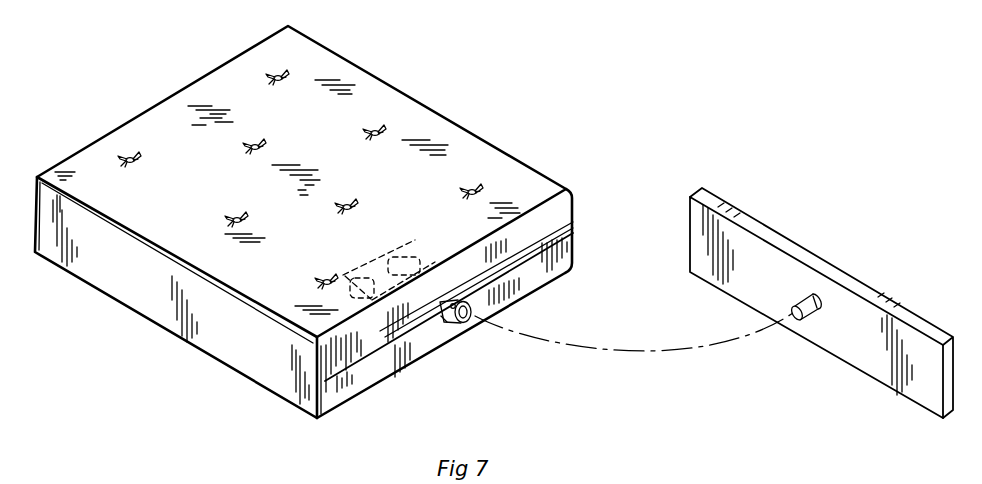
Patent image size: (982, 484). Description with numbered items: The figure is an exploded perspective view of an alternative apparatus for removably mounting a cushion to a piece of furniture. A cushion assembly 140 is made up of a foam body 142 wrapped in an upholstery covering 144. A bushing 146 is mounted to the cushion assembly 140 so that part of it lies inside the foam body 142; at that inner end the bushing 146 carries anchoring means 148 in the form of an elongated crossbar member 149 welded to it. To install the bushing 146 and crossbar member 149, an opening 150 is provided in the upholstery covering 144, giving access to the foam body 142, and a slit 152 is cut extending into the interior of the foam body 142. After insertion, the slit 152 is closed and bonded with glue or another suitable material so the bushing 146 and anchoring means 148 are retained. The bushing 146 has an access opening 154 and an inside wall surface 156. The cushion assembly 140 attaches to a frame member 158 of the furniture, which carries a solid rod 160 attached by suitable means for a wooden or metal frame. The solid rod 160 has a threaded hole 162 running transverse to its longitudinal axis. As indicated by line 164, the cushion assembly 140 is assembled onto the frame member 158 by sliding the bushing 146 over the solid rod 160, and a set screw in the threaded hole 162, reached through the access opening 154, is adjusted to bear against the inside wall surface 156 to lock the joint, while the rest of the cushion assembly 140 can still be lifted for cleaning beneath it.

The cushion assembly 140 is at (438, 110).
The foam body 142 is at (503, 276).
The upholstery covering 144 is at (255, 341).
The bushing 146 is at (448, 315).
The anchoring means 148 is at (392, 242).
The crossbar member 149 is at (368, 270).
The opening 150 is at (509, 262).
The slit 152 is at (428, 322).
The access opening 154 is at (451, 303).
The inside wall surface 156 is at (483, 308).
The frame member 158 is at (885, 355).
The solid rod 160 is at (817, 318).
The threaded hole 162 is at (807, 303).
The line 164 is at (628, 352).